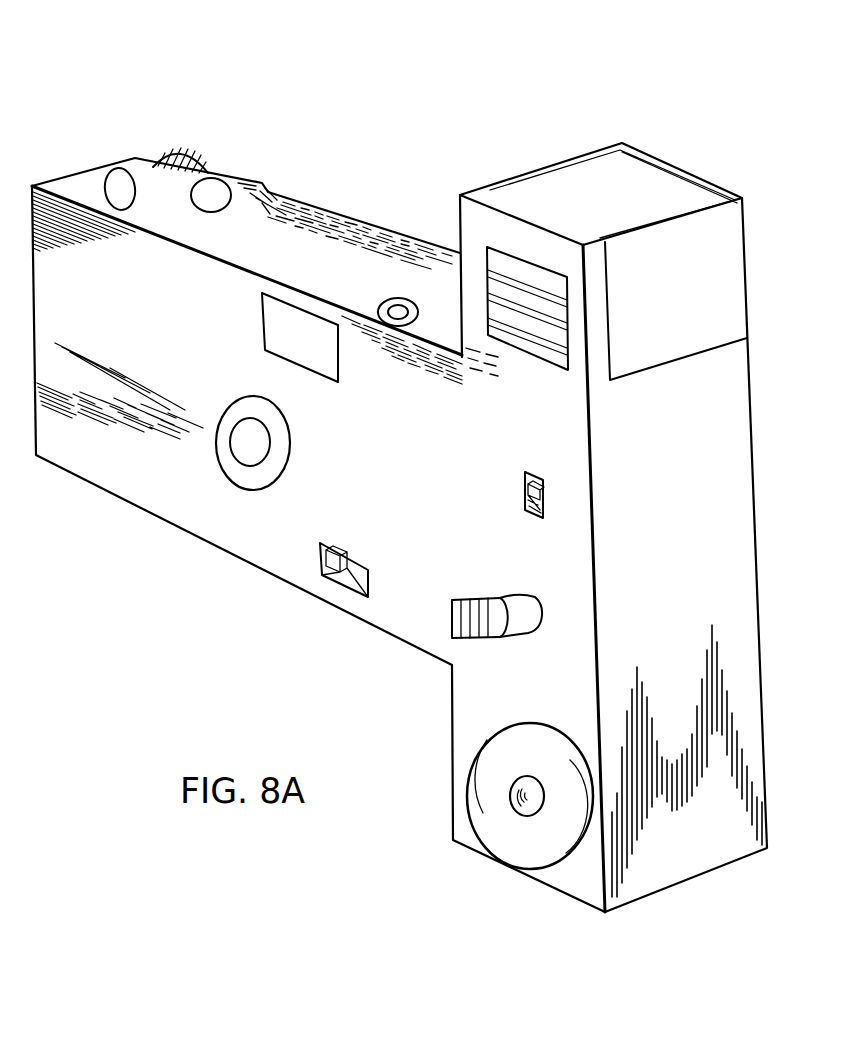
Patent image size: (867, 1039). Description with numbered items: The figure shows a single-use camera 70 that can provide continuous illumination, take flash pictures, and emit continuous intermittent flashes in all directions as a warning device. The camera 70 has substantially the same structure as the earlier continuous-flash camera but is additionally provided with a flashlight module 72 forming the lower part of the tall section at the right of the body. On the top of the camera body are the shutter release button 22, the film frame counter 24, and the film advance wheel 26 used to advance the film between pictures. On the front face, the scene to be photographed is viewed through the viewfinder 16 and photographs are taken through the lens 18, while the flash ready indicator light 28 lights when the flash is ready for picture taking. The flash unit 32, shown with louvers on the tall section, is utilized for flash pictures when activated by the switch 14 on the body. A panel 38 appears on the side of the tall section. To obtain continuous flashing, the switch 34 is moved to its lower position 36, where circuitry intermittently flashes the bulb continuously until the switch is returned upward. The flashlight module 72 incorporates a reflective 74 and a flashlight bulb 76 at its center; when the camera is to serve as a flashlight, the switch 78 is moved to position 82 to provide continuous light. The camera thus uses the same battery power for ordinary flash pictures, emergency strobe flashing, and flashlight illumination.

The camera 70 is at (284, 98).
The flashlight module 72 is at (452, 745).
The shutter release button 22 is at (112, 174).
The film advance wheel 26 is at (175, 155).
The film frame counter 24 is at (215, 190).
The viewfinder 16 is at (318, 318).
The lens 18 is at (270, 456).
The flash ready indicator light 28 is at (398, 298).
The flash unit 32 is at (518, 262).
The label panel 38 is at (690, 304).
The lower position 36 is at (530, 511).
The switch 34 is at (545, 490).
The switch 78 is at (330, 577).
The position 82 is at (358, 586).
The switch 14 is at (500, 641).
The reflective 74 is at (487, 797).
The flashlight bulb 76 is at (530, 812).